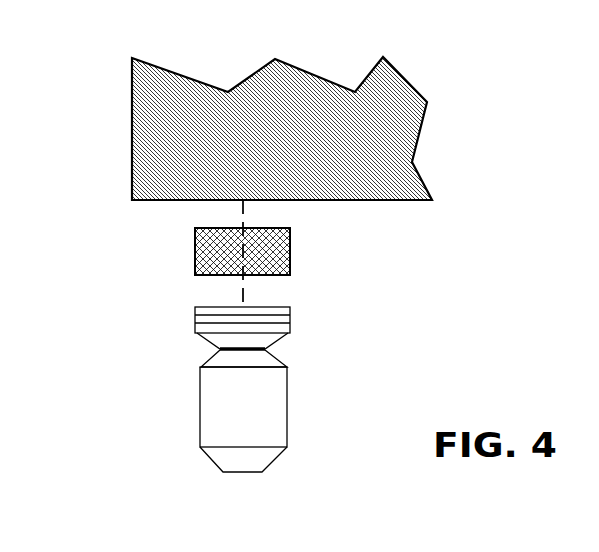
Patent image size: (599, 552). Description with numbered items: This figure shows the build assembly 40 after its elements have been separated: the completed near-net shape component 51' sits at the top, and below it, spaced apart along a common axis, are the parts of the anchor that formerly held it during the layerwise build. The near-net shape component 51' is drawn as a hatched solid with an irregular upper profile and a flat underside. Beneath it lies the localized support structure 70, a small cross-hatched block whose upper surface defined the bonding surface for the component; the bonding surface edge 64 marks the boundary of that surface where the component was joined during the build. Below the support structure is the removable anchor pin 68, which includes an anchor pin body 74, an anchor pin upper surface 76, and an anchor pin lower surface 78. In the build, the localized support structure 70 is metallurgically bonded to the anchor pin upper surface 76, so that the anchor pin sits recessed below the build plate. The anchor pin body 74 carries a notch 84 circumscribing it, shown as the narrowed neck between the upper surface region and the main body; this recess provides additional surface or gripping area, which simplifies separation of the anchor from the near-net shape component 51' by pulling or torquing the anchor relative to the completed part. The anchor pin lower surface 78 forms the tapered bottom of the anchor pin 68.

The near-net shape component 51' is at (231, 128).
The build assembly 40 is at (503, 95).
The localized support structure 70 is at (165, 262).
The bonding surface edge 64 is at (290, 257).
The anchor pin 68 is at (269, 376).
The anchor pin upper surface 76 is at (276, 306).
The notch 84 is at (219, 350).
The anchor pin body 74 is at (222, 421).
The anchor pin lower surface 78 is at (268, 466).